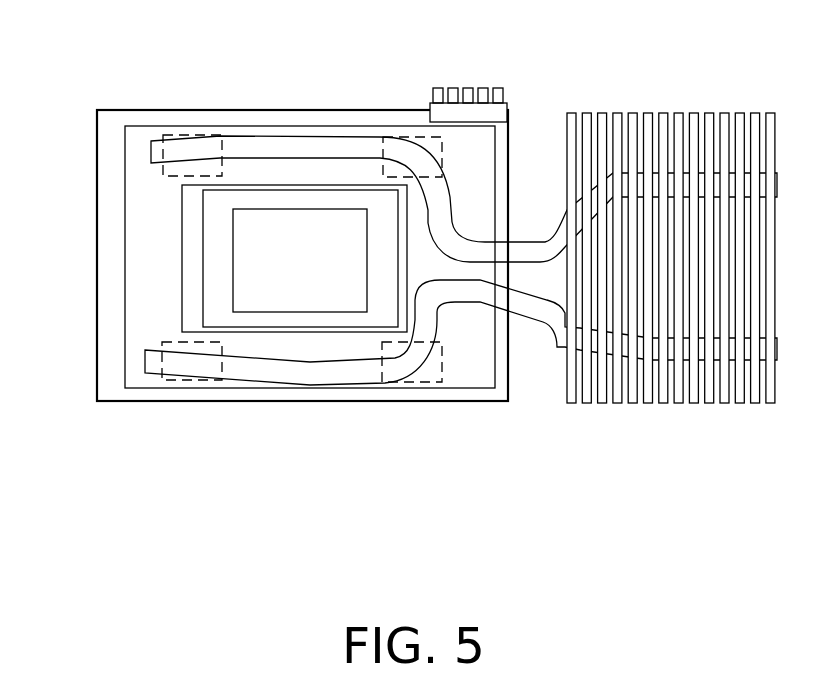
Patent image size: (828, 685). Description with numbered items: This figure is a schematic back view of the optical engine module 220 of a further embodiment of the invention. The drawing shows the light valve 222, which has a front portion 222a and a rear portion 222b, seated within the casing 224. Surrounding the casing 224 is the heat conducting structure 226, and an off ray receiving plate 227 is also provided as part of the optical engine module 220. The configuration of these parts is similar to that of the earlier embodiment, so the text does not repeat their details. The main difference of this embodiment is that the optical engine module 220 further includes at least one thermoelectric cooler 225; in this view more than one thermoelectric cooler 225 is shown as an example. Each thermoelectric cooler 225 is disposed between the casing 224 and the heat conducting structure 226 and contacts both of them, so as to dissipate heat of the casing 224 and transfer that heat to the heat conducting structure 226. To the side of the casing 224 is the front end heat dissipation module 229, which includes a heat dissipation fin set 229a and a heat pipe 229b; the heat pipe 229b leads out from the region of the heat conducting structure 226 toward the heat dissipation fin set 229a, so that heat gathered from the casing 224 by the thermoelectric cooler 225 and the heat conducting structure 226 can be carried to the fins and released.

The optical engine module 220 is at (75, 90).
The light valve 222 is at (432, 470).
The front portion 222a is at (343, 300).
The rear portion 222b is at (383, 307).
The casing 224 is at (110, 167).
The thermoelectric cooler 225 is at (166, 136).
The heat conducting structure 226 is at (138, 212).
The off ray receiving plate 227 is at (468, 100).
The front end heat dissipation module 229 is at (600, 470).
The heat dissipation fin set 229a is at (568, 397).
The heat pipe 229b is at (483, 252).